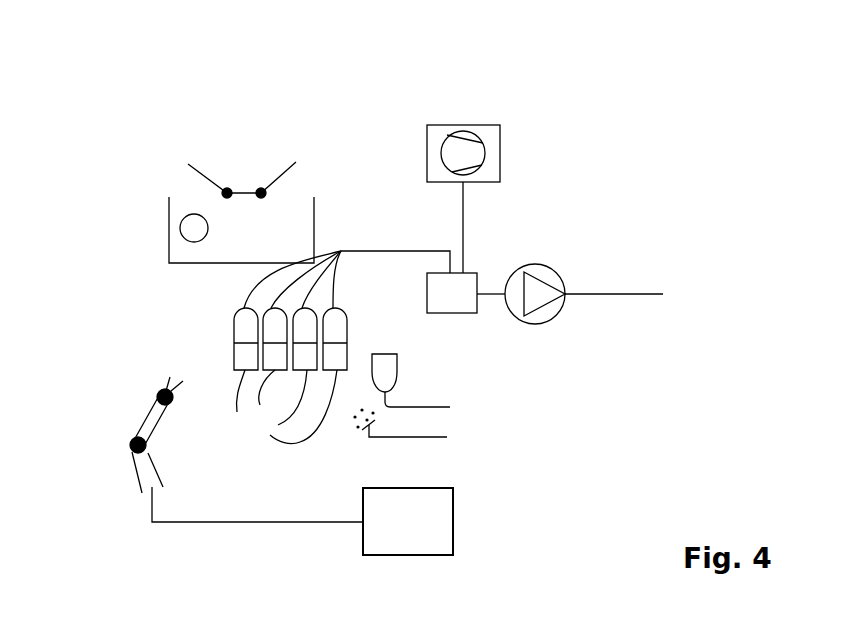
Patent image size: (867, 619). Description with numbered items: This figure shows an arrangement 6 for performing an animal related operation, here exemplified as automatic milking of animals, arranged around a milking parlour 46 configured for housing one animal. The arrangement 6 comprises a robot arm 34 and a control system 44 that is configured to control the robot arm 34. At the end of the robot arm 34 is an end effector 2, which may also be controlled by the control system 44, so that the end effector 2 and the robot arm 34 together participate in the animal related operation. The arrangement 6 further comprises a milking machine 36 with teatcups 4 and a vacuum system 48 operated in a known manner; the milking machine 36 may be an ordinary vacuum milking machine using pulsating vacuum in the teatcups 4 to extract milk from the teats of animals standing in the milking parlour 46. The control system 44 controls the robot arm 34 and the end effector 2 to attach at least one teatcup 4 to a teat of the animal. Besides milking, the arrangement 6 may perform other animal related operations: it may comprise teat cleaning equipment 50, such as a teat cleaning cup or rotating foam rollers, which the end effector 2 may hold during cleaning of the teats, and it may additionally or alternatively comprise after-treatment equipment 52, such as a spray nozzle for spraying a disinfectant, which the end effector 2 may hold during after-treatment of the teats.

The end effector 2 is at (168, 378).
The teatcup 4 is at (290, 347).
The arrangement for performing an animal related operation 6 is at (235, 128).
The robot arm 34 is at (143, 463).
The milking machine 36 is at (355, 140).
The control system 44 is at (392, 531).
The milking parlour 46 is at (702, 140).
The vacuum system 48 is at (435, 140).
The teat cleaning equipment 50 is at (410, 372).
The after-treatment equipment 52 is at (418, 422).